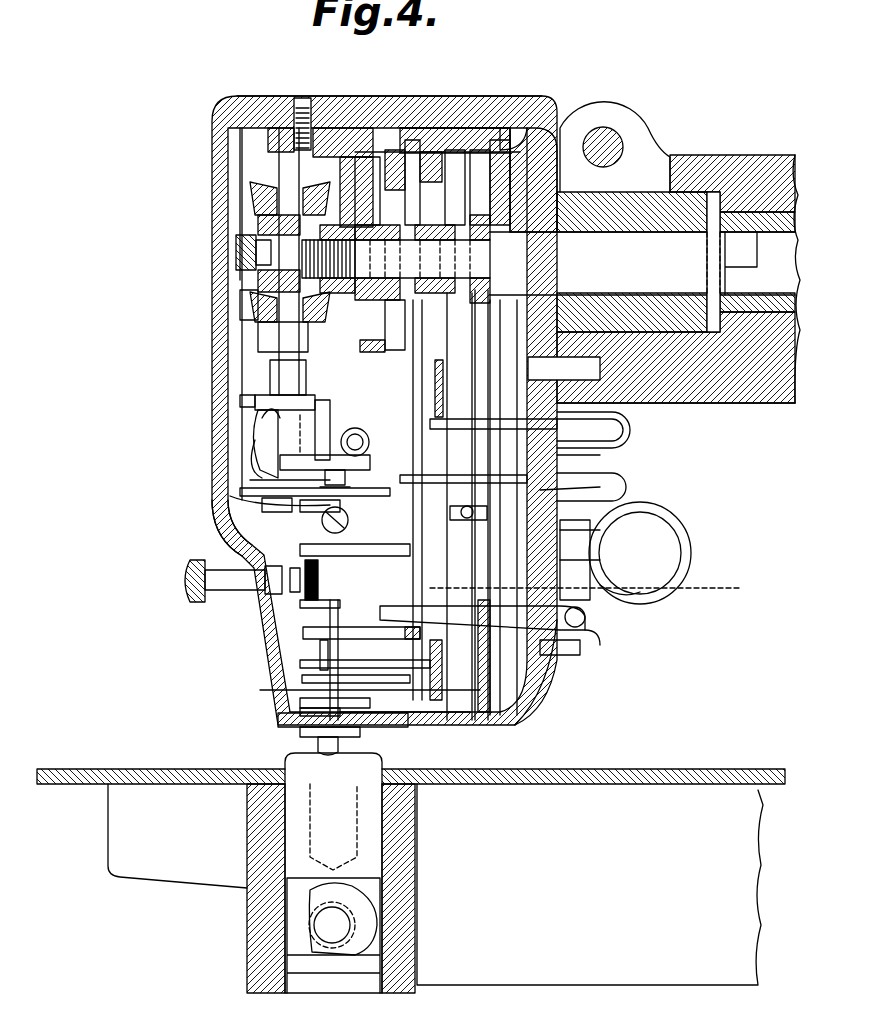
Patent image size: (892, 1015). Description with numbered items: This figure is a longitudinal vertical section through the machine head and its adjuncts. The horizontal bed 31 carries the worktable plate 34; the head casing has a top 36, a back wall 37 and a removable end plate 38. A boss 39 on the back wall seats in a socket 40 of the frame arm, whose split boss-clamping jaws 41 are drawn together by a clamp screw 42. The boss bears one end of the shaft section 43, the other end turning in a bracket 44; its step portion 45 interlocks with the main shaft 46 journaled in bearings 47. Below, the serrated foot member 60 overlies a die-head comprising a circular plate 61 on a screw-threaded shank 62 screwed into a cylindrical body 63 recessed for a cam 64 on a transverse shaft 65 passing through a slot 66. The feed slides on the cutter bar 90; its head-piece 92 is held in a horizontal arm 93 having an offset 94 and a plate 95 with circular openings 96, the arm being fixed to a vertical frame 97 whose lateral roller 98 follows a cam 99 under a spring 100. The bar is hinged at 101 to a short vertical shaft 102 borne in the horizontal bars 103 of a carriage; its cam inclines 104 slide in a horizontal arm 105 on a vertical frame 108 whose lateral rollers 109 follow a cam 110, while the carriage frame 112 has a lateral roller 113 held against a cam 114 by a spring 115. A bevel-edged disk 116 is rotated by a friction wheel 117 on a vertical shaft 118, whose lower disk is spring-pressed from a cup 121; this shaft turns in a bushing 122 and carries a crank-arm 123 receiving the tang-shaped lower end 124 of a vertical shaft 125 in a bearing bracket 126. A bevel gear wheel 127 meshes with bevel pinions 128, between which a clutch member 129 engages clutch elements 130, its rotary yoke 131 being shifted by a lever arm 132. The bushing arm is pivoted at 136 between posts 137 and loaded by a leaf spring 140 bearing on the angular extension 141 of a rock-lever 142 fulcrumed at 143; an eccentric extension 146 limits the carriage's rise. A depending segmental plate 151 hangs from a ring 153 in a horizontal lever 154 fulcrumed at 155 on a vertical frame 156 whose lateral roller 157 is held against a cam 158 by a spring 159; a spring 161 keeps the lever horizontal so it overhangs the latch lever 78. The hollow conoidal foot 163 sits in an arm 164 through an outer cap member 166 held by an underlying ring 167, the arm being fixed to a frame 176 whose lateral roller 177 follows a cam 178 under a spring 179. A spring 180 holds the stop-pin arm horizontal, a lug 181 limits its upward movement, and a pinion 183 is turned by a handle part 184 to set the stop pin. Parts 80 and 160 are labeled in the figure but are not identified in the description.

The horizontal bed 31 is at (561, 962).
The plate 34 is at (132, 754).
The top 36 is at (356, 102).
The back wall 37 is at (560, 672).
The removable end plate 38 is at (214, 141).
The boss 39 is at (680, 210).
The socket 40 is at (734, 163).
The boss-clamping jaws 41 is at (598, 112).
The clamp screw 42 is at (610, 140).
The shaft section 43 is at (642, 263).
The bracket 44 is at (404, 155).
The step portion 45 is at (712, 258).
The main shaft 46 is at (751, 263).
The bearings 47 is at (772, 400).
The serrated foot member 60 is at (340, 744).
The circular plate 61 is at (297, 758).
The screw-threaded shank 62 is at (345, 842).
The cylindrical body 63 is at (368, 826).
The cam 64 is at (308, 910).
The transverse shaft 65 is at (330, 927).
The slot 66 is at (350, 900).
The latch lever 78 is at (640, 592).
The lever 80 is at (603, 626).
The cutter bar 90 is at (330, 662).
The head-piece 92 is at (323, 683).
The horizontal arm 93 is at (412, 720).
The offset 94 is at (362, 695).
The plate 95 is at (320, 692).
The circular openings 96 is at (476, 505).
The vertical frame 97 is at (475, 682).
The lateral roller 98 is at (452, 185).
The cam 99 is at (490, 188).
The spring 100 is at (690, 546).
The hinge connection 101 is at (325, 524).
The short vertical shaft 102 is at (300, 505).
The horizontal bars 103 is at (421, 526).
The cam inclines 104 is at (322, 648).
The horizontal arm 105 is at (308, 632).
The vertical frame 108 is at (440, 190).
The lateral rollers 109 is at (410, 175).
The cam 110 is at (395, 207).
The vertical frame 112 is at (395, 356).
The lateral roller 113 is at (372, 342).
The cam 114 is at (365, 300).
The spring 115 is at (565, 492).
The bevel-edged disk 116 is at (330, 490).
The friction wheel 117 is at (243, 487).
The vertical shaft 118 is at (230, 500).
The cup 121 is at (262, 502).
The bushing 122 is at (308, 435).
The crank-arm 123 is at (273, 380).
The tang-shaped lower end 124 is at (273, 373).
The vertical shaft 125 is at (280, 285).
The bearing bracket 126 is at (257, 340).
The bevel gear wheel 127 is at (247, 300).
The bevel pinions 128 is at (250, 202).
The clutch member 129 is at (277, 274).
The clutch elements 130 is at (256, 226).
The rotary yoke 131 is at (237, 240).
The lever arm 132 is at (245, 248).
The pivot 136 is at (350, 432).
The posts 137 is at (318, 418).
The leaf spring 140 is at (258, 424).
The angular extension 141 is at (243, 478).
The rock-lever 142 is at (258, 430).
The fulcrum 143 is at (250, 450).
The eccentric extension 146 is at (380, 432).
The depending segmental plate 151 is at (300, 600).
The ring 153 is at (330, 548).
The horizontal lever 154 is at (229, 520).
The fulcrum 155 is at (630, 497).
The vertical frame 156 is at (553, 648).
The lateral roller 157 is at (420, 345).
The cam 158 is at (440, 152).
The spring 159 is at (632, 424).
The hub 160 is at (596, 545).
The spring 161 is at (600, 473).
The hollow conoidal foot 163 is at (300, 736).
The vertically-reciprocative arm 164 is at (405, 737).
The outer cap member 166 is at (300, 703).
The underlying ring 167 is at (300, 714).
The vertically-movable frame 176 is at (505, 700).
The lateral roller 177 is at (478, 213).
The cam 178 is at (512, 227).
The spring 179 is at (667, 590).
The spring 180 is at (250, 548).
The lug 181 is at (560, 563).
The pinion 183 is at (280, 570).
The handle part 184 is at (190, 586).